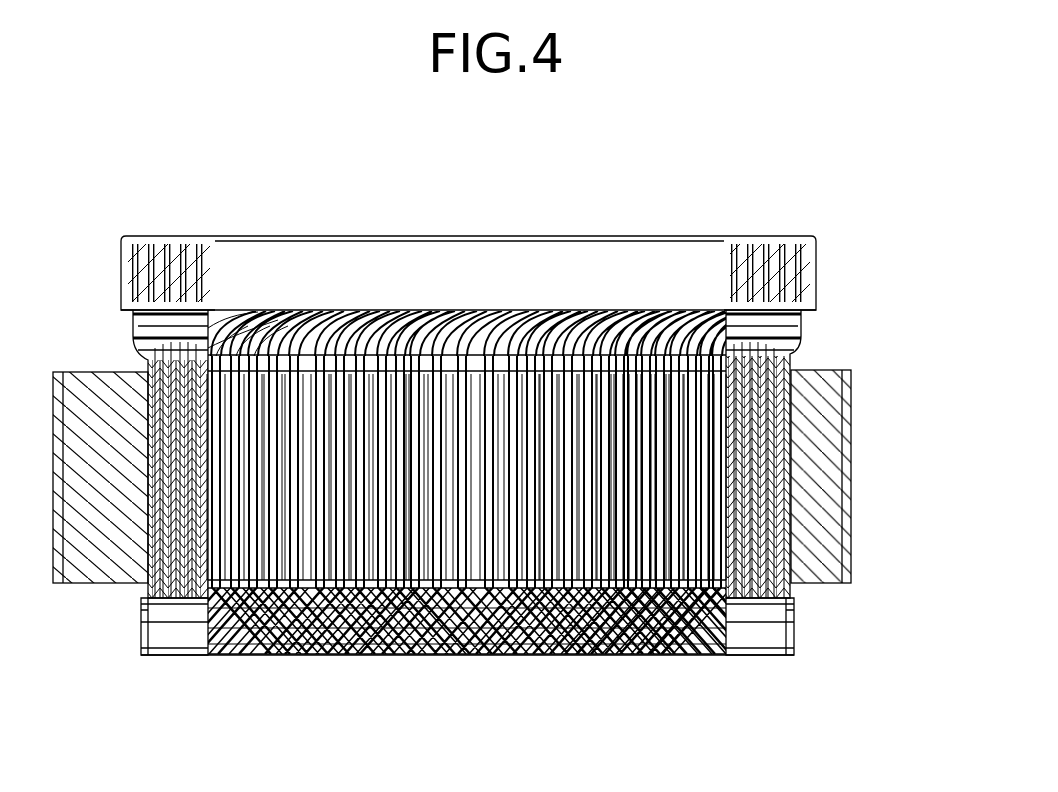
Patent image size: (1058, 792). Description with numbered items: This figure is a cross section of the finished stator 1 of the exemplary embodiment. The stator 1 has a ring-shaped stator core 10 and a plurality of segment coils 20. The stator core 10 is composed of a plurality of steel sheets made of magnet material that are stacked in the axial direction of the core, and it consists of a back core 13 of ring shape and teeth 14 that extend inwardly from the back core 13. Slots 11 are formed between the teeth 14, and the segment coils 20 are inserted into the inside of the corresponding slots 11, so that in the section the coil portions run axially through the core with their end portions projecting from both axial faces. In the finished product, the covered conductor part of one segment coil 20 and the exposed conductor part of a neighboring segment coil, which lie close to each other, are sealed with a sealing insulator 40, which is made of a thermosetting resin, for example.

The stator 1 is at (190, 178).
The stator core 10 is at (872, 476).
The slots 11 is at (316, 430).
The back core 13 is at (825, 455).
The teeth 14 is at (600, 410).
The segment coils 20 is at (510, 690).
The sealing insulator 40 is at (407, 258).